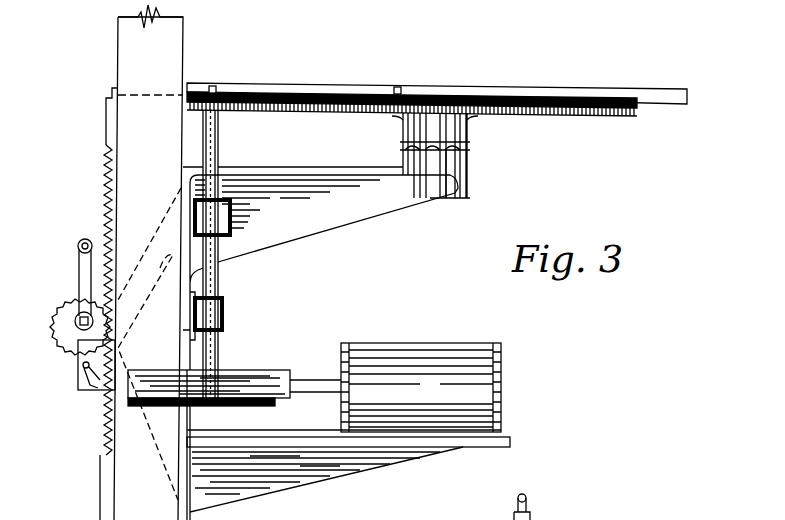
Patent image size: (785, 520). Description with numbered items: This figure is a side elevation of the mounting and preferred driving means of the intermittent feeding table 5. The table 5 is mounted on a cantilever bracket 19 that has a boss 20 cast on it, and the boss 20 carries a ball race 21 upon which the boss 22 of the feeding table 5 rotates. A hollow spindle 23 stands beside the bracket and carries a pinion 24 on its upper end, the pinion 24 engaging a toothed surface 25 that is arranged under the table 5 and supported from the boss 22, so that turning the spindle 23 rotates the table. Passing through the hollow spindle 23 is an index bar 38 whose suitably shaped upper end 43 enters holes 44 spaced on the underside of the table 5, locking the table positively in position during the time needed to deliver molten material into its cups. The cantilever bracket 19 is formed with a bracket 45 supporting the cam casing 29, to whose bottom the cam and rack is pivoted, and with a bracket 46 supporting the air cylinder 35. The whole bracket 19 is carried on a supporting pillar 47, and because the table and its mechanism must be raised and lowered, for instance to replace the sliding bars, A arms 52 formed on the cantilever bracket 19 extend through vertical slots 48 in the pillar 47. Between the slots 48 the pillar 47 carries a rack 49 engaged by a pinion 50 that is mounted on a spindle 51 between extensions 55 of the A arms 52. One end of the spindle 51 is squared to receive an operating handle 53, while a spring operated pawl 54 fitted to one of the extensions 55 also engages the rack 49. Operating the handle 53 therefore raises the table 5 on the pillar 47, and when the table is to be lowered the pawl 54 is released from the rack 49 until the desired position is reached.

The feeding table 5 is at (332, 91).
The cantilever bracket 19 is at (320, 268).
The boss 20 is at (470, 161).
The ball race 21 is at (470, 148).
The boss of the feeding table 22 is at (403, 125).
The hollow spindle 23 is at (220, 150).
The pinion 24 is at (222, 113).
The toothed surface 25 is at (339, 103).
The casing 29 is at (238, 384).
The air cylinder 35 is at (412, 373).
The index bar 38 is at (528, 508).
The upper end of the index bar 43 is at (216, 87).
The holes 44 is at (401, 88).
The bracket 45 is at (240, 406).
The bracket 46 is at (420, 450).
The pillar 47 is at (135, 490).
The vertical slots 48 is at (160, 414).
The rack 49 is at (105, 207).
The pinion 50 is at (66, 330).
The spindle 51 is at (76, 322).
The A arms 52 is at (142, 435).
The operating handle 53 is at (82, 268).
The spring operated pawl 54 is at (84, 372).
The extensions 55 is at (84, 352).